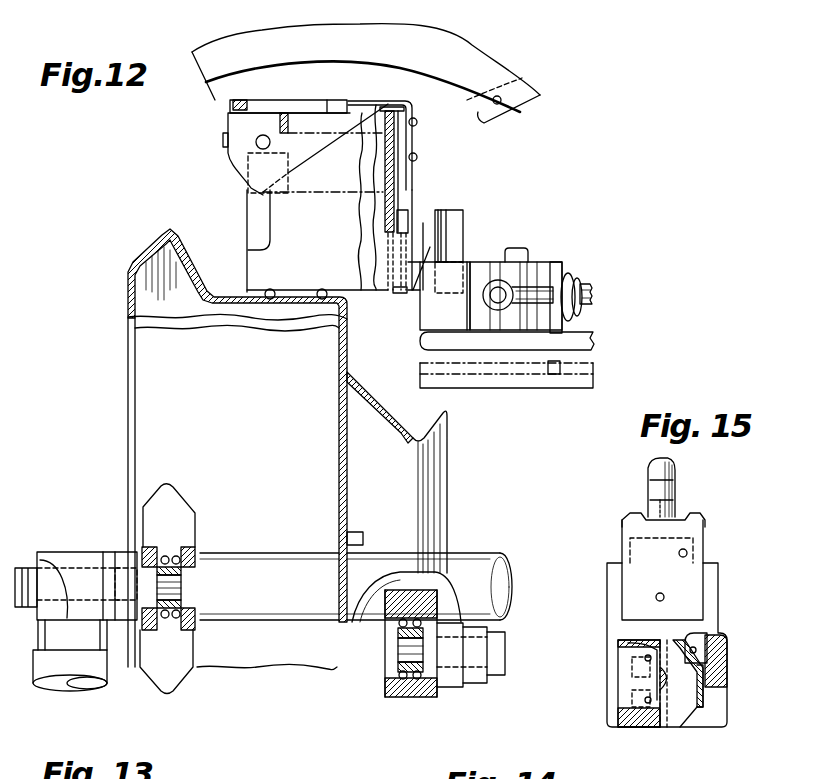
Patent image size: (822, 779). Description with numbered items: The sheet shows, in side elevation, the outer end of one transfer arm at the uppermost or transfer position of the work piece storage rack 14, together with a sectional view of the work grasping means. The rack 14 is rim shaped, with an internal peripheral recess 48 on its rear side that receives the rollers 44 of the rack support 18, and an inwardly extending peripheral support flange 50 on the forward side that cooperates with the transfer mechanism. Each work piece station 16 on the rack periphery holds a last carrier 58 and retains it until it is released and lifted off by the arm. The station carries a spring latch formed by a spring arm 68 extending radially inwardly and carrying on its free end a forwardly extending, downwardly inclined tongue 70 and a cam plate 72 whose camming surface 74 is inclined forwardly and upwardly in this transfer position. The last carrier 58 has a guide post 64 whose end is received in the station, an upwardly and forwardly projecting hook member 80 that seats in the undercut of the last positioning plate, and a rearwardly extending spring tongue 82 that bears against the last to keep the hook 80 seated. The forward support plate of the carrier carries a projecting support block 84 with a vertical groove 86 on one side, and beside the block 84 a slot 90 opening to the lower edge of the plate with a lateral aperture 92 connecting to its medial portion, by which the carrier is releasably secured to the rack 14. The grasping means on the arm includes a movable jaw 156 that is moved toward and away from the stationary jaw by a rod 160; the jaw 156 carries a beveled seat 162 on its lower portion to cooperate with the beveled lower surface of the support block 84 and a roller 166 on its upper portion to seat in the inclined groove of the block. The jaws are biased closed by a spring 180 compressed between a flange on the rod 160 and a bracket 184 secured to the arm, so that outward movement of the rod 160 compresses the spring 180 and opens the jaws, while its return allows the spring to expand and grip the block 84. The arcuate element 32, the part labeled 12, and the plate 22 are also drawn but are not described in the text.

In FIG. 12, the mounting plate 12 is at (307, 103).
In FIG. 12, the work piece storage rack 14 is at (122, 288).
In FIG. 12, the work piece station 16 is at (246, 267).
In FIG. 12, the rack support 18 is at (68, 551).
In FIG. 12, the base plate 22 is at (585, 348).
In FIG. 12, the arcuate arm 32 is at (358, 73).
In FIG. 12, the rollers 44 is at (178, 507).
In FIG. 12, the internal peripheral recess 48 is at (164, 251).
In FIG. 12, the peripheral support flange 50 is at (418, 432).
In FIG. 12, the last carrier 58 is at (220, 125).
In FIG. 15, the guide post 64 is at (648, 514).
In FIG. 12, the spring arm 68 is at (397, 152).
In FIG. 12, the tongue 70 is at (400, 293).
In FIG. 12, the cam plate 72 is at (418, 229).
In FIG. 12, the camming surface 74 is at (416, 289).
In FIG. 12, the hook member 80 is at (237, 101).
In FIG. 12, the spring tongue 82 is at (392, 105).
In FIG. 12, the support block 84 is at (456, 210).
In FIG. 12, the vertical groove 86 is at (438, 210).
In FIG. 12, the slot 90 is at (400, 222).
In FIG. 15, the slot 90 is at (642, 673).
In FIG. 15, the lateral aperture 92 is at (652, 681).
In FIG. 12, the movable jaw 156 is at (495, 262).
In FIG. 15, the movable jaw 156 is at (724, 695).
In FIG. 12, the rod 160 is at (591, 297).
In FIG. 15, the beveled seat 162 is at (690, 713).
In FIG. 15, the roller 166 is at (678, 640).
In FIG. 12, the spring 180 is at (579, 316).
In FIG. 12, the bracket 184 is at (556, 265).